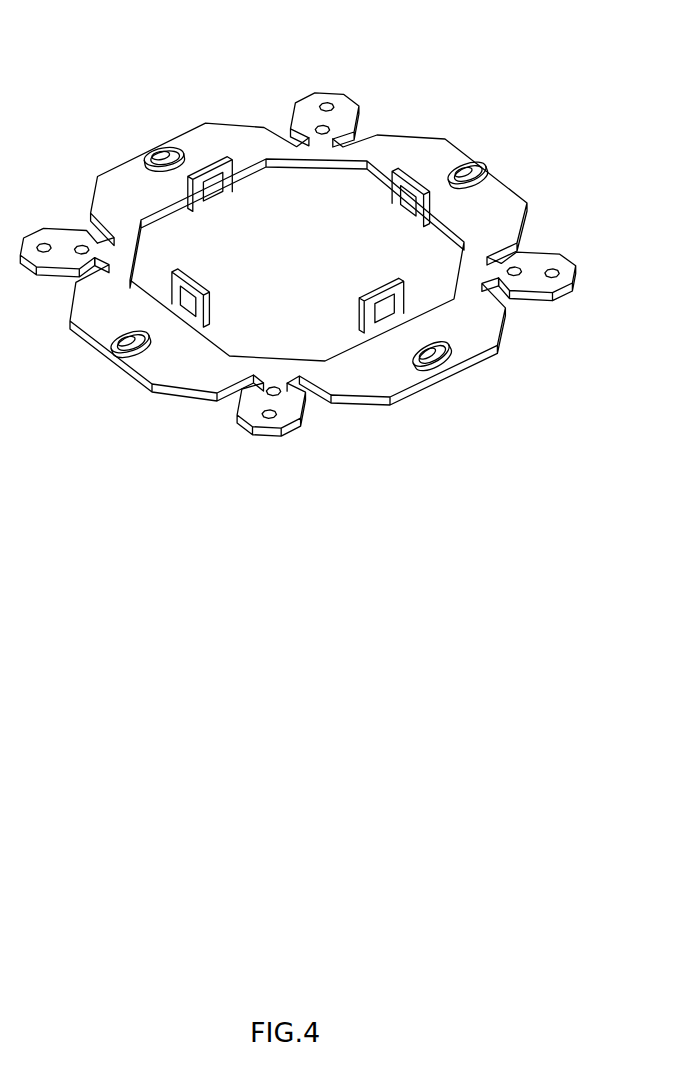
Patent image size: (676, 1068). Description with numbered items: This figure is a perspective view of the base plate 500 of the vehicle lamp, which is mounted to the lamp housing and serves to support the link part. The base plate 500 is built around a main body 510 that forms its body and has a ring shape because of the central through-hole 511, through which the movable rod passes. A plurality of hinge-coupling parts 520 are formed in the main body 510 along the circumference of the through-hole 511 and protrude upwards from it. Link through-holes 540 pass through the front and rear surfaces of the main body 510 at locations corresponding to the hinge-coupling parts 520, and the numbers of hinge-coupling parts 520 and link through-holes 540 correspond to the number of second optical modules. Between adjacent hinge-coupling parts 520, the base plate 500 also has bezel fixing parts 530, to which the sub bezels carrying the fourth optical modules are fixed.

The base plate 500 is at (103, 41).
The main body 510 is at (490, 323).
The through-hole 511 is at (443, 230).
The hinge-coupling part 520 is at (360, 334).
The bezel fixing part 530 is at (261, 410).
The link through-hole 540 is at (470, 347).